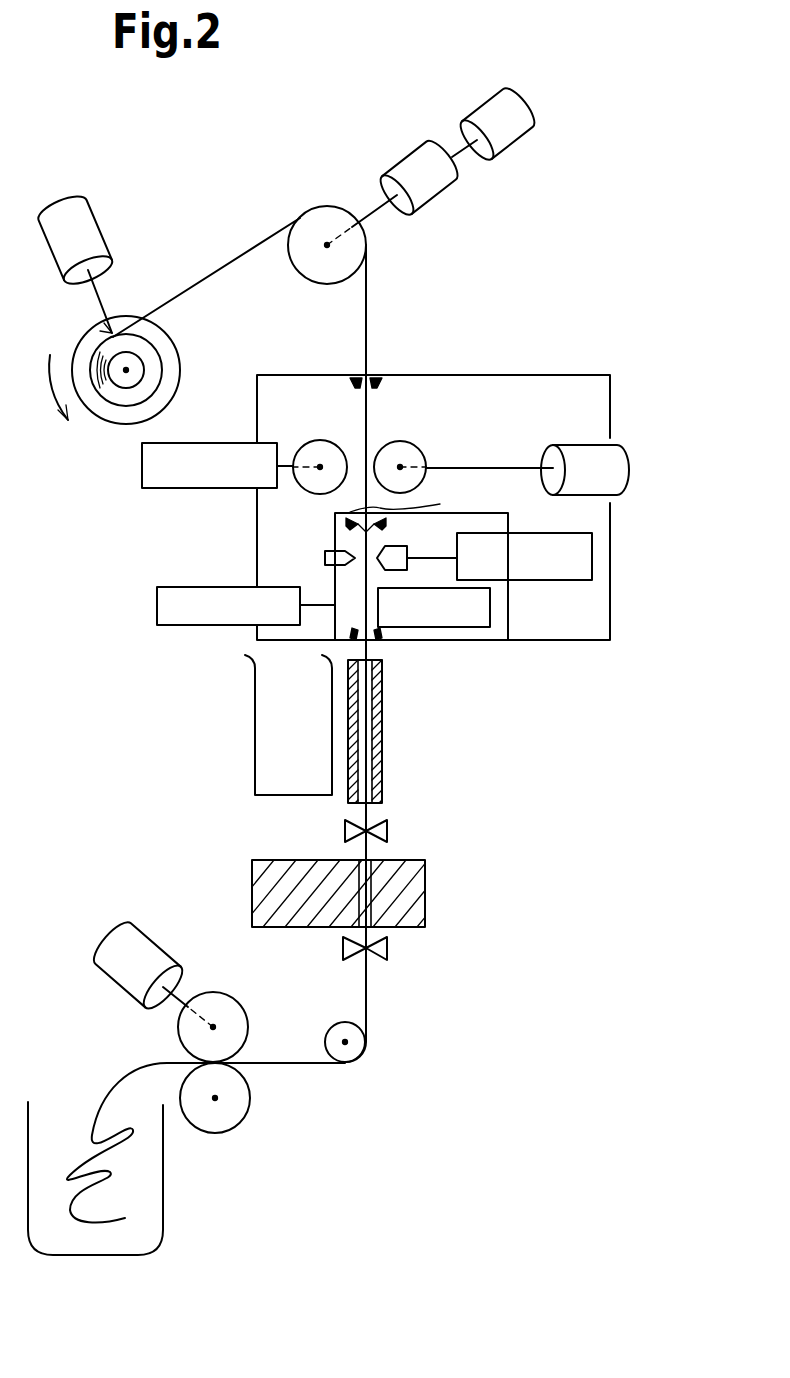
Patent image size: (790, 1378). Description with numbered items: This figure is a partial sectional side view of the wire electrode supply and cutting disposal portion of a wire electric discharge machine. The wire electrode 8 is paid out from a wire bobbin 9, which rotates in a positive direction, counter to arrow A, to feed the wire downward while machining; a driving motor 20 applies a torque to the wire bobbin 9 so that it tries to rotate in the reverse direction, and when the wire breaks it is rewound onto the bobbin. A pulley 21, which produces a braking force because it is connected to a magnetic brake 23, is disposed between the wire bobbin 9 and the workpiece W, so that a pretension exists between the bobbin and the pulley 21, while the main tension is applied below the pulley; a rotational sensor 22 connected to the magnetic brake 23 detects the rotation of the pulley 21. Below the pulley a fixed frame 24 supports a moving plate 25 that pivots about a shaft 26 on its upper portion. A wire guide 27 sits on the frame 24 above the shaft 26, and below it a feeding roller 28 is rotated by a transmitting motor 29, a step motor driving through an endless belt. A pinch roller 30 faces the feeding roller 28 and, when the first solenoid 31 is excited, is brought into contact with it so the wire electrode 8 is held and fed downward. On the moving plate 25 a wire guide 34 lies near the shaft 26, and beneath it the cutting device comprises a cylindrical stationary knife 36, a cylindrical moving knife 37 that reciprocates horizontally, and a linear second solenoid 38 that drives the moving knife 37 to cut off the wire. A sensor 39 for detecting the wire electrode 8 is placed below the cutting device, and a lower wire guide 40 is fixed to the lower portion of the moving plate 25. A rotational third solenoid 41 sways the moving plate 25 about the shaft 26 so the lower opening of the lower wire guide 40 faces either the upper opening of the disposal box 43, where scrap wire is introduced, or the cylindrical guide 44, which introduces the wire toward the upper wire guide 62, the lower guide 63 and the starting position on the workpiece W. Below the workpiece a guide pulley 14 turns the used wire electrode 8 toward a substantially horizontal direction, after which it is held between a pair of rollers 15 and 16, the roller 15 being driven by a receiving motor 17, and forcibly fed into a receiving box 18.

The wire electrode 8 is at (228, 262).
The wire bobbin 9 is at (113, 412).
The guide pulley 14 is at (345, 1060).
The roller 15 is at (232, 1010).
The roller 16 is at (236, 1106).
The receiving motor 17 is at (112, 945).
The receiving box 18 is at (163, 1205).
The driving motor 20 is at (85, 232).
The pulley 21 is at (320, 220).
The rotational sensor 22 is at (512, 132).
The magnetic brake 23 is at (440, 185).
The fixed frame 24 is at (619, 390).
The moving plate 25 is at (480, 643).
The shaft 26 is at (412, 493).
The wire guide 27 is at (380, 378).
The feeding roller 28 is at (407, 452).
The transmitting motor 29 is at (620, 466).
The pinch roller 30 is at (313, 452).
The first solenoid 31 is at (150, 488).
The wire guide 34 is at (340, 521).
The stationary knife 36 is at (325, 558).
The moving knife 37 is at (398, 548).
The second solenoid 38 is at (592, 552).
The sensor 39 is at (490, 610).
The lower wire guide 40 is at (382, 641).
The third solenoid 41 is at (157, 603).
The disposal box 43 is at (255, 745).
The cylindrical guide 44 is at (382, 725).
The upper wire guide 62 is at (387, 830).
The lower guide 63 is at (387, 948).
The workpiece W is at (252, 890).
The arrow A is at (50, 383).